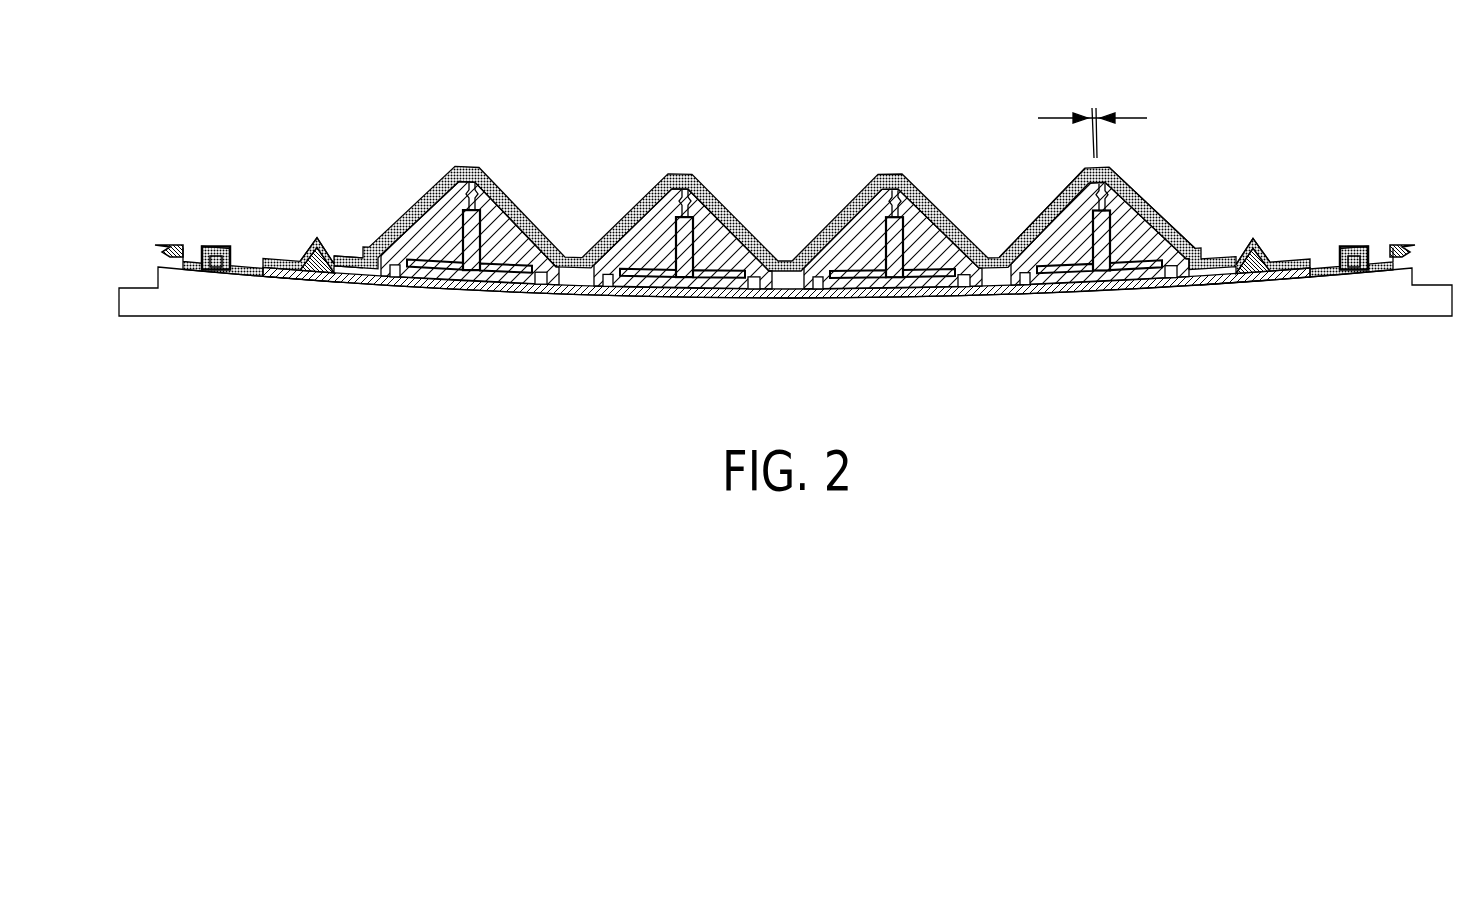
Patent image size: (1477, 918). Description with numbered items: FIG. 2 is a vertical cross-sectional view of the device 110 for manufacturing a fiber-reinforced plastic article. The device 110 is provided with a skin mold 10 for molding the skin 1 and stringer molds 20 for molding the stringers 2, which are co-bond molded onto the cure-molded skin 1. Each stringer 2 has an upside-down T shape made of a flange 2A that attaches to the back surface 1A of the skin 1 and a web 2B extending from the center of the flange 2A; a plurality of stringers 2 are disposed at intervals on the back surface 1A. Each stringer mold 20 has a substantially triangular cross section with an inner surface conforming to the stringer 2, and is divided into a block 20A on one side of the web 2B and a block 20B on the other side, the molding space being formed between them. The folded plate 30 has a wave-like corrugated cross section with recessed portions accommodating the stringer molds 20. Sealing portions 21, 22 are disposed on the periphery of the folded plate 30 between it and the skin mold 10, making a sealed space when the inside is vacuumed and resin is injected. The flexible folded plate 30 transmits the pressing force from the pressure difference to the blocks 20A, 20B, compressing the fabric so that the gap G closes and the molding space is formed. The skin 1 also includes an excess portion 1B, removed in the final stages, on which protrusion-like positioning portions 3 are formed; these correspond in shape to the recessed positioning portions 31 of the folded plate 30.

The device for manufacturing 110 is at (1183, 123).
The skin 1 is at (575, 297).
The back surface 1A is at (346, 255).
The excess portion 1B is at (290, 282).
The skin mold 10 is at (1084, 300).
The stringer 2 is at (470, 252).
The flange 2A is at (463, 298).
The web 2B is at (455, 184).
The positioning portion 3 is at (312, 274).
The stringer mold 20 is at (1107, 206).
The block 20A is at (1130, 178).
The block 20B is at (1056, 190).
The sealing portion 21 is at (212, 245).
The sealing portion 22 is at (156, 252).
The folded plate 30 is at (732, 206).
The positioning portion 31 is at (310, 240).
The gap G is at (1092, 119).